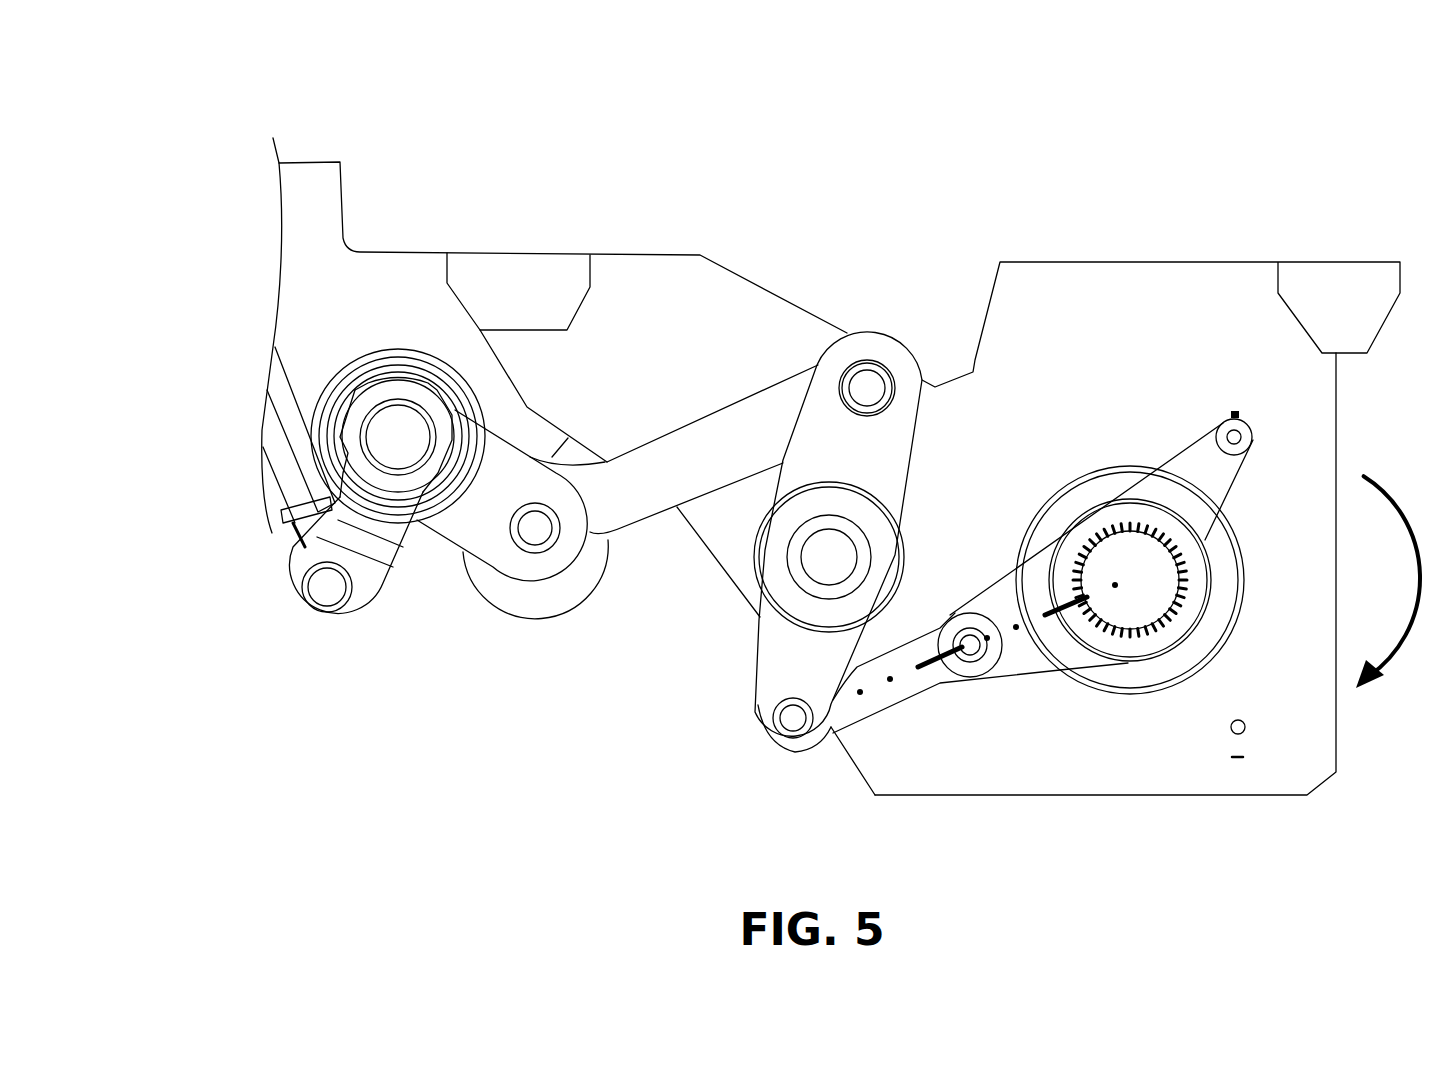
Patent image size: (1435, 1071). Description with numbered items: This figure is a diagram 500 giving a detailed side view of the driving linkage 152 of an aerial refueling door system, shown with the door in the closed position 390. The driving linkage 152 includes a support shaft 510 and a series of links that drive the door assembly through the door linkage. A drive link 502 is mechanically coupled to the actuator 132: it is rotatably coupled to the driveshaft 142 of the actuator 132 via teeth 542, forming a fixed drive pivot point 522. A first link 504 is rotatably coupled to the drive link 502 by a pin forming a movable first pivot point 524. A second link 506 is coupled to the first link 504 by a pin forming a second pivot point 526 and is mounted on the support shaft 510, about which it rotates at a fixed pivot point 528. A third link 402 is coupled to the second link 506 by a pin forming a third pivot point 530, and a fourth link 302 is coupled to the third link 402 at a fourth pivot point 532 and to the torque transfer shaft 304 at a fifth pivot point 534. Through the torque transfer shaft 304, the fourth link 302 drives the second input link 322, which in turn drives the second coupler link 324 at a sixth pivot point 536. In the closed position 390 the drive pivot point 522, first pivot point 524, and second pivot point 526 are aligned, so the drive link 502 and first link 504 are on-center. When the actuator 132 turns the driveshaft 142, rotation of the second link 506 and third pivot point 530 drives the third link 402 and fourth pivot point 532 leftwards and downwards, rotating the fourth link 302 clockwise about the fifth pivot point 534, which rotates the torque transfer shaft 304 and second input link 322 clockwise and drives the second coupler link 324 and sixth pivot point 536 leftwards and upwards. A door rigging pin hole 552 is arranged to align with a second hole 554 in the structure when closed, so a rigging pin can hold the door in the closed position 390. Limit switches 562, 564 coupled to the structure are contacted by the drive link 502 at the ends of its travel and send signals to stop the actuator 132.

The diagram 500 is at (142, 66).
The driving linkage 152 is at (607, 136).
The actuator 132 is at (1218, 583).
The closed position 390 is at (1219, 360).
The fifth pivot point 534 is at (398, 438).
The torque transfer shaft 304 is at (407, 405).
The second coupler link 324 is at (275, 423).
The second input link 322 is at (370, 580).
The sixth pivot point 536 is at (327, 587).
The fourth link 302 is at (570, 517).
The fourth pivot point 532 is at (535, 530).
The third link 402 is at (747, 415).
The second link 506 is at (835, 362).
The third pivot point 530 is at (867, 388).
The support shaft 510 is at (800, 548).
The fixed pivot point 528 is at (830, 560).
The second pivot point 526 is at (793, 718).
The first link 504 is at (875, 703).
The first pivot point 524 is at (973, 650).
The drive link 502 is at (1020, 590).
The driveshaft 142 is at (1108, 566).
The teeth 542 is at (1140, 533).
The drive pivot point 522 is at (1130, 582).
The door rigging pin hole 552 is at (1240, 425).
The first limit switch 562 is at (1232, 413).
The second hole 554 is at (1241, 733).
The limit switch 564 is at (1238, 757).